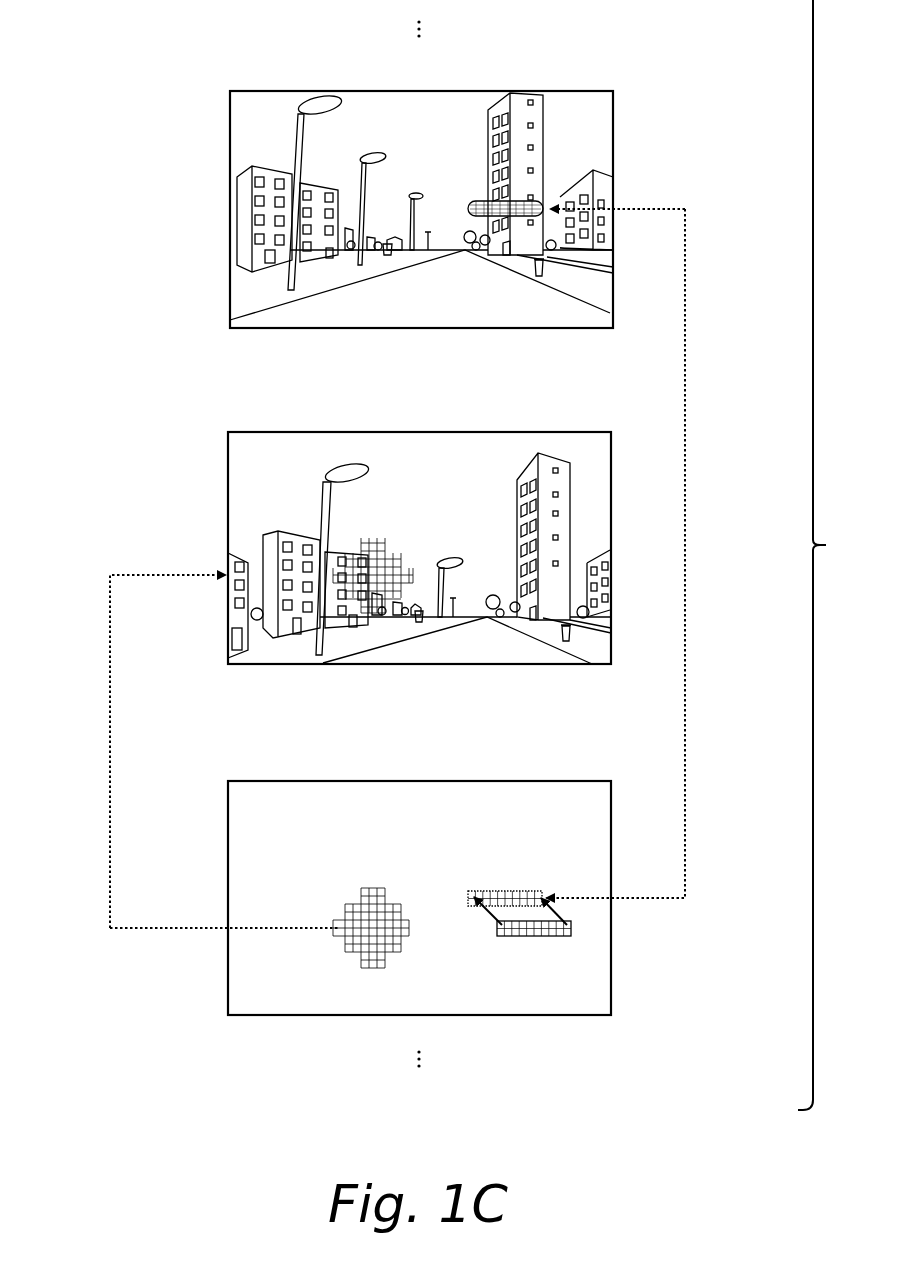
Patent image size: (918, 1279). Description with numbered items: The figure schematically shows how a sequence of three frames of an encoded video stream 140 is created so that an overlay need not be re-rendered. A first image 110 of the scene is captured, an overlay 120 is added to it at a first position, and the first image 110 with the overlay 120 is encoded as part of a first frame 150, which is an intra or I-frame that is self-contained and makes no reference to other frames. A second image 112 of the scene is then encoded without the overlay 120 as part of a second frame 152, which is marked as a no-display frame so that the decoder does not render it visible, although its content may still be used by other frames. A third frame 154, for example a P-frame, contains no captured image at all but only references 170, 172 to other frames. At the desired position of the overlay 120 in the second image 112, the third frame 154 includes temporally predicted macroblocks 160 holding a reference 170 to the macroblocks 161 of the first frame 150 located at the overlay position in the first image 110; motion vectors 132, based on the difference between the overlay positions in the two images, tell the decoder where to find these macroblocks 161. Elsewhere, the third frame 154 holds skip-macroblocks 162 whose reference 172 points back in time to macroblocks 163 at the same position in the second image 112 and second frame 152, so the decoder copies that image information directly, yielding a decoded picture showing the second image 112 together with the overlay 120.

The first image 110 is at (248, 143).
The second image 112 is at (248, 498).
The overlay 120 is at (483, 213).
The motion vectors 132 is at (490, 915).
The encoded video stream 140 is at (842, 555).
The first frame 150 is at (263, 91).
The second frame 152 is at (263, 432).
The third frame 154 is at (263, 781).
The macroblocks 160 is at (555, 936).
The macroblocks 161 is at (486, 200).
The macroblocks 162 is at (350, 942).
The macroblocks 163 is at (370, 538).
The reference 170 is at (685, 815).
The reference 172 is at (110, 808).